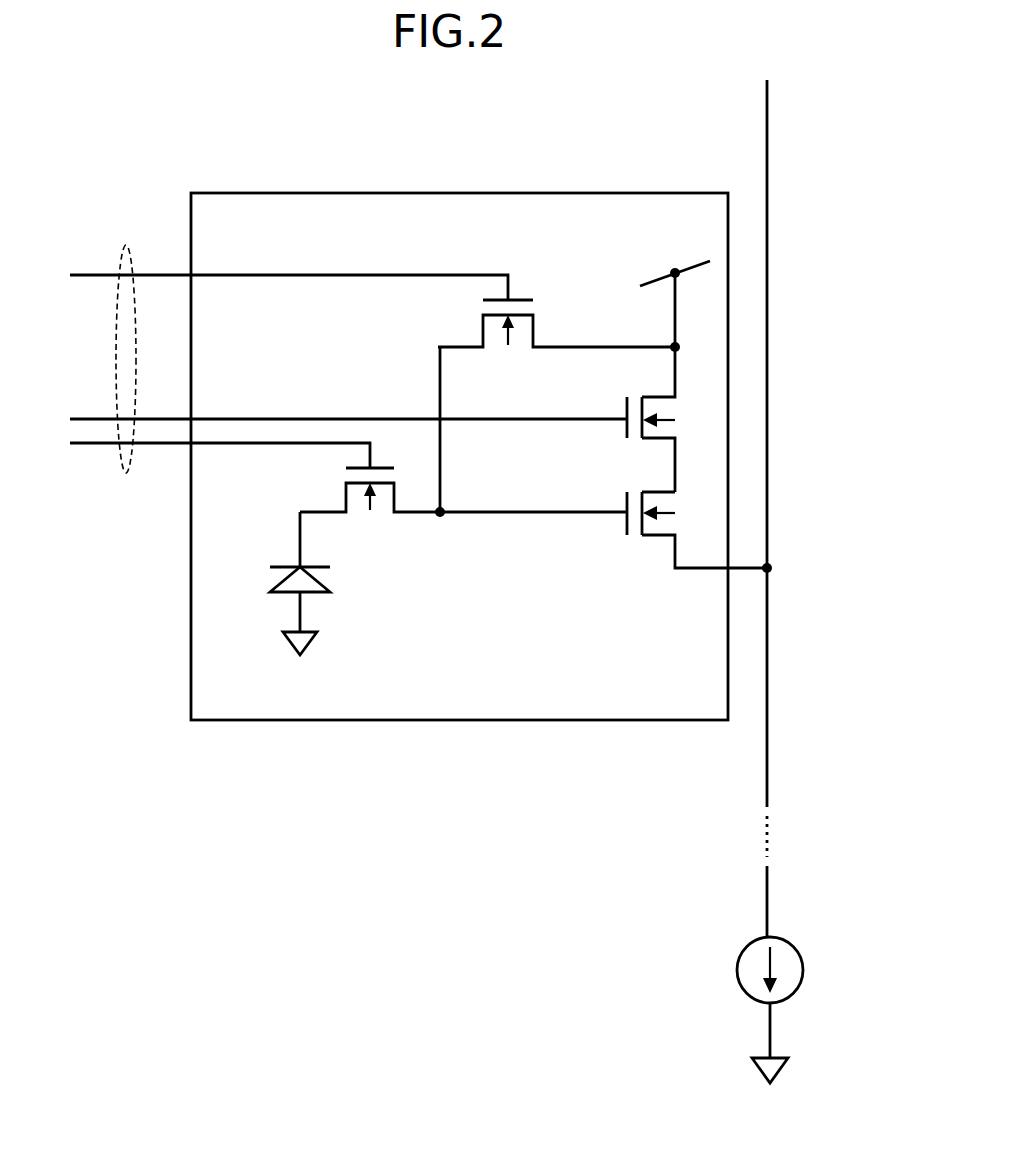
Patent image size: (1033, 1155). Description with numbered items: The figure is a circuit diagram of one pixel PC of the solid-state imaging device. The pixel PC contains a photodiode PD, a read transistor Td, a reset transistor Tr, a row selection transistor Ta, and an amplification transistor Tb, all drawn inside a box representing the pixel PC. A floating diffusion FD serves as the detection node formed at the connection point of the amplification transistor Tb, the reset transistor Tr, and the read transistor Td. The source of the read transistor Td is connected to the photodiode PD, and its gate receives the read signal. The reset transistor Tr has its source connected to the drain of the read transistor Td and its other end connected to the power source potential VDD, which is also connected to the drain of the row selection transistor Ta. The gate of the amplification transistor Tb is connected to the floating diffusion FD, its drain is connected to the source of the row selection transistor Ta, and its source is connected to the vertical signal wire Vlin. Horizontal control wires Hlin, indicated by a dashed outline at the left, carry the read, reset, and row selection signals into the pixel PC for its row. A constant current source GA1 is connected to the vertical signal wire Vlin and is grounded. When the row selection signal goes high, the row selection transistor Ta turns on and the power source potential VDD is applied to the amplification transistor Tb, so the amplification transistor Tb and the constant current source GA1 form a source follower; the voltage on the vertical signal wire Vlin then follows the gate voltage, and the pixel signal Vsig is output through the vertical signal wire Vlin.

The pixel PC is at (262, 193).
The horizontal control wire Hlin is at (123, 346).
The reset transistor Tr is at (482, 333).
The power source potential VDD is at (675, 296).
The row selection transistor Ta is at (622, 432).
The amplification transistor Tb is at (622, 525).
The read transistor Td is at (340, 500).
The floating diffusion FD is at (440, 518).
The photodiode PD is at (312, 577).
The vertical signal wire Vlin is at (769, 299).
The pixel signal Vsig is at (792, 568).
The constant current source GA1 is at (804, 966).